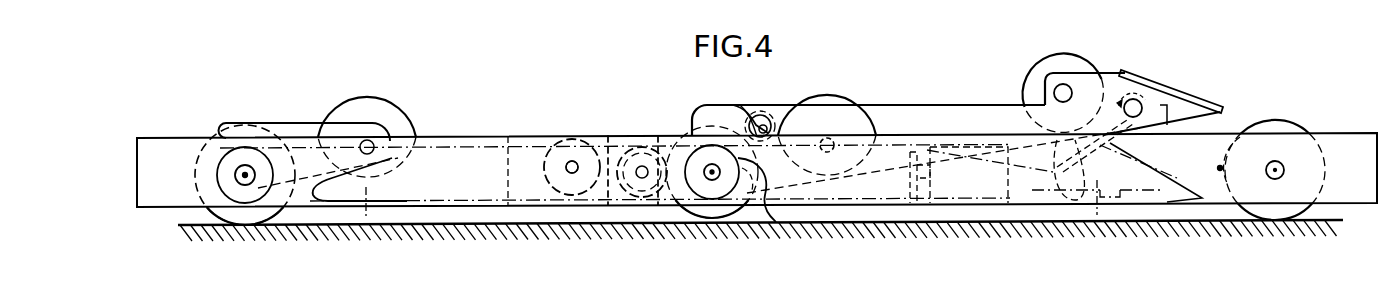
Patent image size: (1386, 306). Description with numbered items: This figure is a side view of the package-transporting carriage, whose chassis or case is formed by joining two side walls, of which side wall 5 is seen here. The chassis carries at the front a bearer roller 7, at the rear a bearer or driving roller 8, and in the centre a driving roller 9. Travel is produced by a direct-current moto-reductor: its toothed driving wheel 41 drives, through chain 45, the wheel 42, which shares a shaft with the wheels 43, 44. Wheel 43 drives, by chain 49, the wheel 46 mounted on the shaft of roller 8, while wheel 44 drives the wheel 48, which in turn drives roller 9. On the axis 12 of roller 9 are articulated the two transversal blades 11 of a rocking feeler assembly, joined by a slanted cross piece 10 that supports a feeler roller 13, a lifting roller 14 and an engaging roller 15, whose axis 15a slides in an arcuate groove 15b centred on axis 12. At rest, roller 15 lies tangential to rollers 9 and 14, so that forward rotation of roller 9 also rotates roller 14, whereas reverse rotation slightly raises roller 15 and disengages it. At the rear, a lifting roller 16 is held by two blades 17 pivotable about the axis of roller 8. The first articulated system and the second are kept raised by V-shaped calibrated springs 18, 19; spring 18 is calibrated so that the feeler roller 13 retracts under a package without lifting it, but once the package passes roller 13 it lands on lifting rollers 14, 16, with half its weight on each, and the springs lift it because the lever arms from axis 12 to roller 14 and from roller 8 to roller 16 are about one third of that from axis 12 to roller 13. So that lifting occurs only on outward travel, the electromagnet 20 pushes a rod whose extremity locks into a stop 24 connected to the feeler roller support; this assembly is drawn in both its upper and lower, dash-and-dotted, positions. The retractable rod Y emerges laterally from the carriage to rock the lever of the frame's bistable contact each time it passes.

The side wall 5 is at (551, 137).
The bearer roller 7 is at (1285, 121).
The bearer or driving roller 8 is at (184, 148).
The driving roller 9 is at (645, 135).
The slanted cross piece 10 is at (1176, 88).
The blade of the rocking feeler assembly 11 is at (926, 118).
The axis of roller 9 12 is at (712, 180).
The feeler roller 13 is at (1030, 84).
The lifting roller 14 is at (846, 108).
The engaging roller 15 is at (782, 112).
The axis of engaging roller 15a is at (768, 122).
The arcuate groove 15b is at (750, 118).
The lifting roller 16 is at (393, 120).
The blades 17 is at (282, 123).
The calibrated spring 18 is at (1060, 222).
The calibrated spring 19 is at (330, 218).
The electromagnet 20 is at (970, 200).
The stop 24 is at (1152, 110).
The toothed driving wheel 41 is at (568, 140).
The wheel 42 is at (613, 204).
The wheel 43 is at (613, 206).
The wheel 44 is at (613, 208).
The chain 45 is at (612, 137).
The wheel 46 is at (215, 222).
The wheel 48 is at (777, 222).
The chain 49 is at (480, 137).
The retractable rod Y is at (1220, 168).